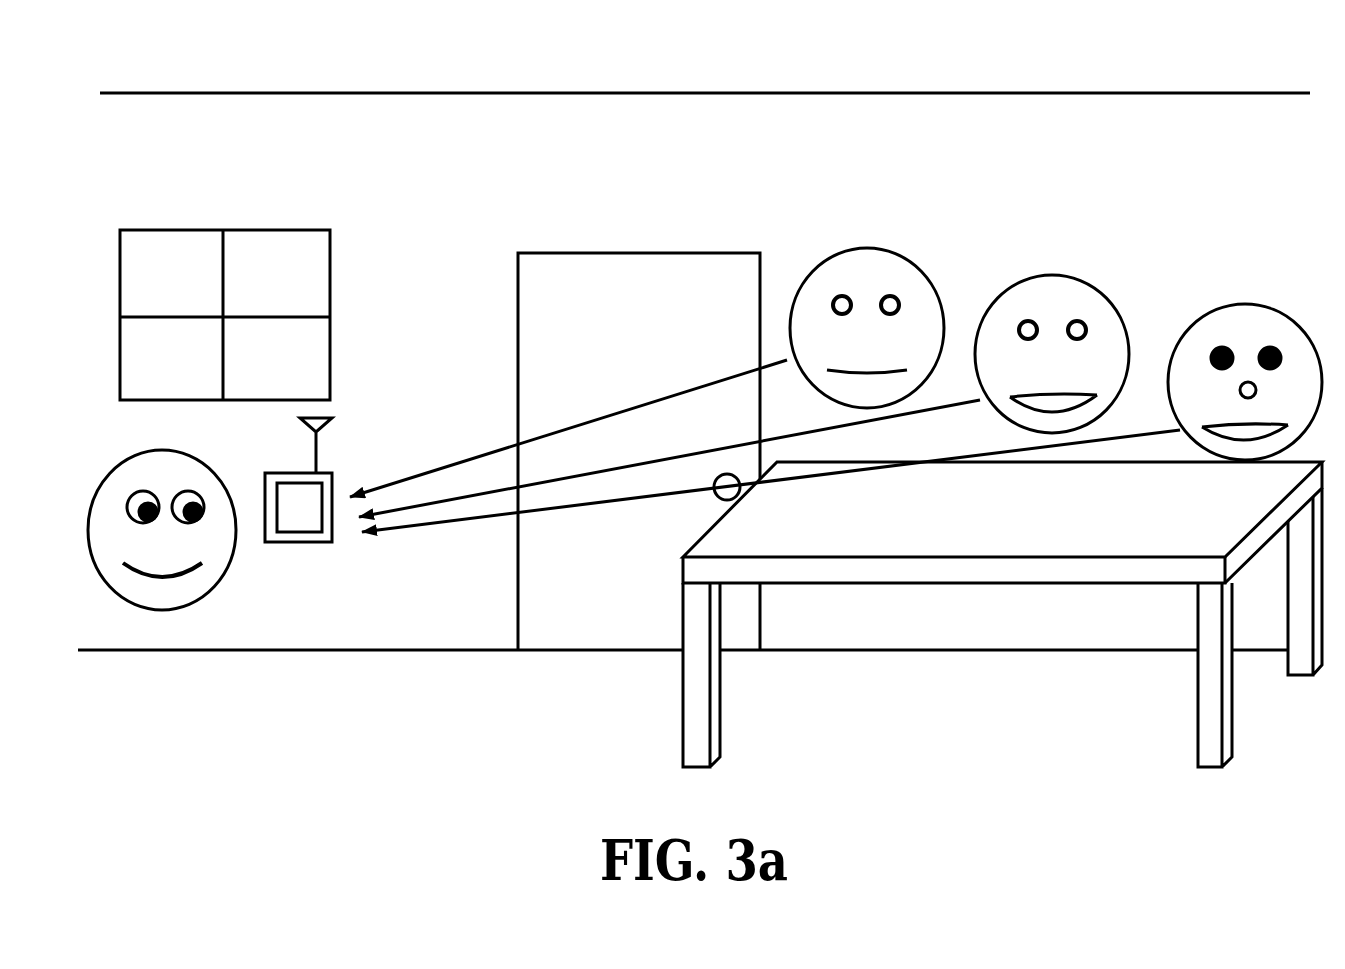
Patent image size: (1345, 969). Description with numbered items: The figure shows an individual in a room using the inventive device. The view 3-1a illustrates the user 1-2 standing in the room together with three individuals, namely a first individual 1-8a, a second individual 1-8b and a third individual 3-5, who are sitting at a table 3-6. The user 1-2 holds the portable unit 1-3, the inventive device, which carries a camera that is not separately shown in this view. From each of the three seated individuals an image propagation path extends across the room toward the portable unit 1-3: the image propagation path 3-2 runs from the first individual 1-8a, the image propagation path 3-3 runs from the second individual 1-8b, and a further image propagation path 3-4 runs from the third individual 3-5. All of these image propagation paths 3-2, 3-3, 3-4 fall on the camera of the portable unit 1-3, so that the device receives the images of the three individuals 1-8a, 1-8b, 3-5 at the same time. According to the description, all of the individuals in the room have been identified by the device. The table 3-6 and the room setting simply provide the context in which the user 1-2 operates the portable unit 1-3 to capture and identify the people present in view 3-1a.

The view 3-1a is at (353, 80).
The user 1-2 is at (162, 615).
The portable unit 1-3 is at (293, 552).
The image propagation path 3-2 is at (467, 455).
The image propagation path 3-3 is at (415, 503).
The signal path from third person 3-4 is at (450, 525).
The first individual 1-8a is at (893, 250).
The second individual 1-8b is at (1061, 273).
The third individual 3-5 is at (1260, 301).
The table 3-6 is at (1002, 589).